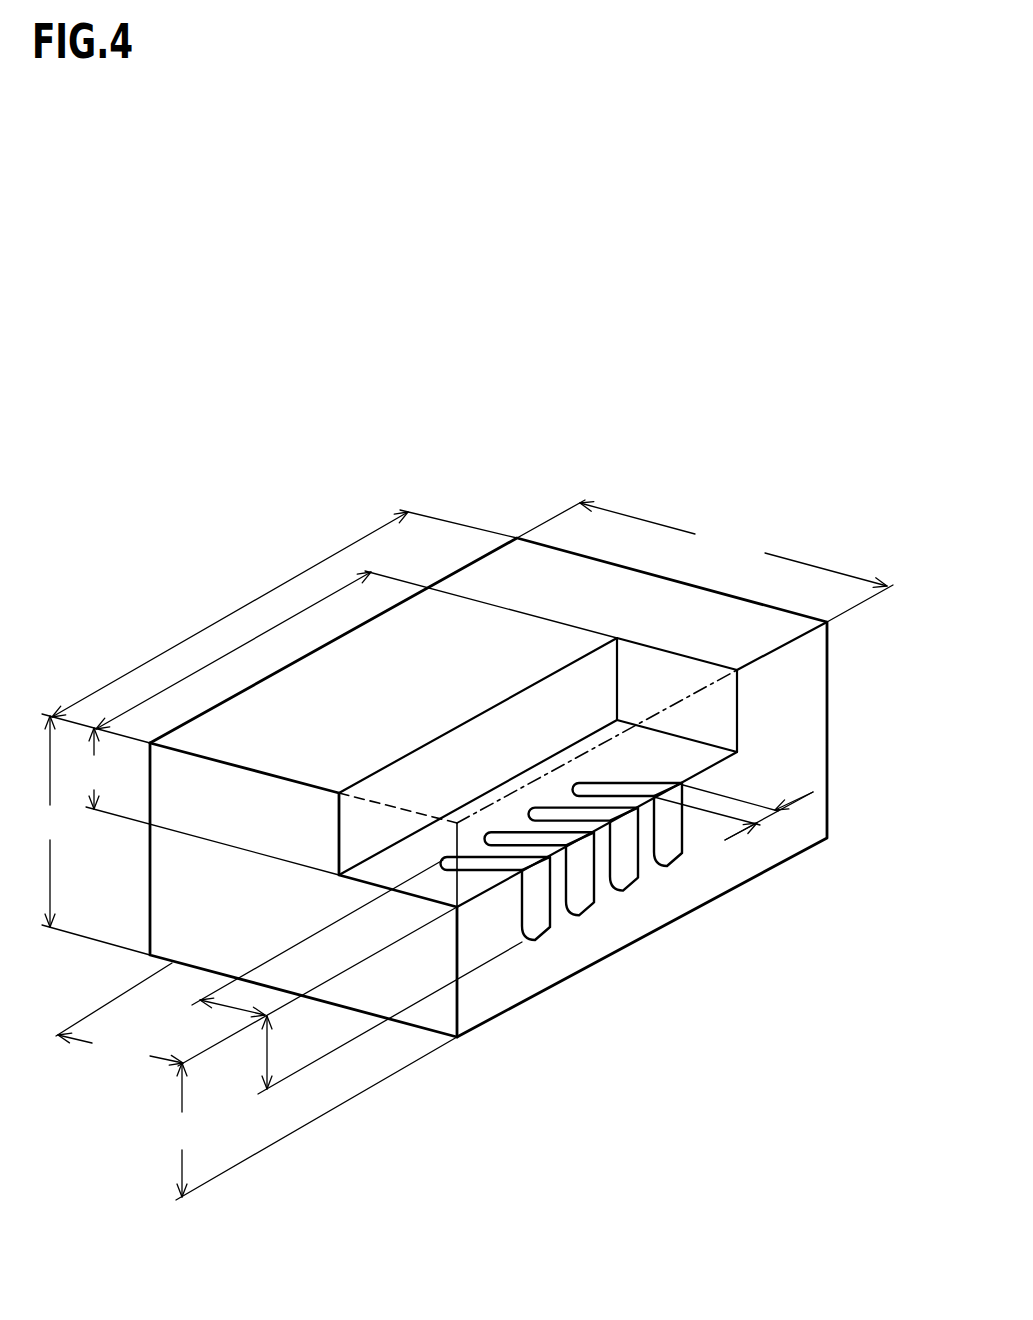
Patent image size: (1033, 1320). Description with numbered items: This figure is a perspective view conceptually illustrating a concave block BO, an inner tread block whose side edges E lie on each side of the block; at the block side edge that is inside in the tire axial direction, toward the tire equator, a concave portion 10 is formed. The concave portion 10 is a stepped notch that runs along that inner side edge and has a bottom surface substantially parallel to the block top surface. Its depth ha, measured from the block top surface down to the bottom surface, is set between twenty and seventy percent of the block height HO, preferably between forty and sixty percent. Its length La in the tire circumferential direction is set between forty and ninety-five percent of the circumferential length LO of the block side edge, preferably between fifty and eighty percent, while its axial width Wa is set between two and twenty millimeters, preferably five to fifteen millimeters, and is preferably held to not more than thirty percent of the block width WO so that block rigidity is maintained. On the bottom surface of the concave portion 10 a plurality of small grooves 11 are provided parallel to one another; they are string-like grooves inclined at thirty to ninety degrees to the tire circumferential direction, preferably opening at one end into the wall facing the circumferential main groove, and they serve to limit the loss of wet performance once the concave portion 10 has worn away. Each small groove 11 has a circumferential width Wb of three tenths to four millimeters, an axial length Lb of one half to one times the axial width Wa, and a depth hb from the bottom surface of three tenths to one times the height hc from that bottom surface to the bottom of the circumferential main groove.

The concave block BO is at (492, 577).
The concave portion 10 is at (400, 858).
The small grooves 11 is at (535, 920).
The block side edges E is at (780, 647).
The circumferential length of the block side edges LO is at (279, 626).
The length of the concave portion La is at (356, 650).
The block width WO is at (705, 561).
The block height HO is at (88, 835).
The depth of the concave portion ha is at (95, 768).
The axial width of the concave portion Wa is at (256, 986).
The small groove length Lb is at (230, 1006).
The small groove depth hb is at (266, 1052).
The height from the bottom surface to the groove bottom of the circumferential main hc is at (309, 1118).
The small groove width Wb is at (770, 813).